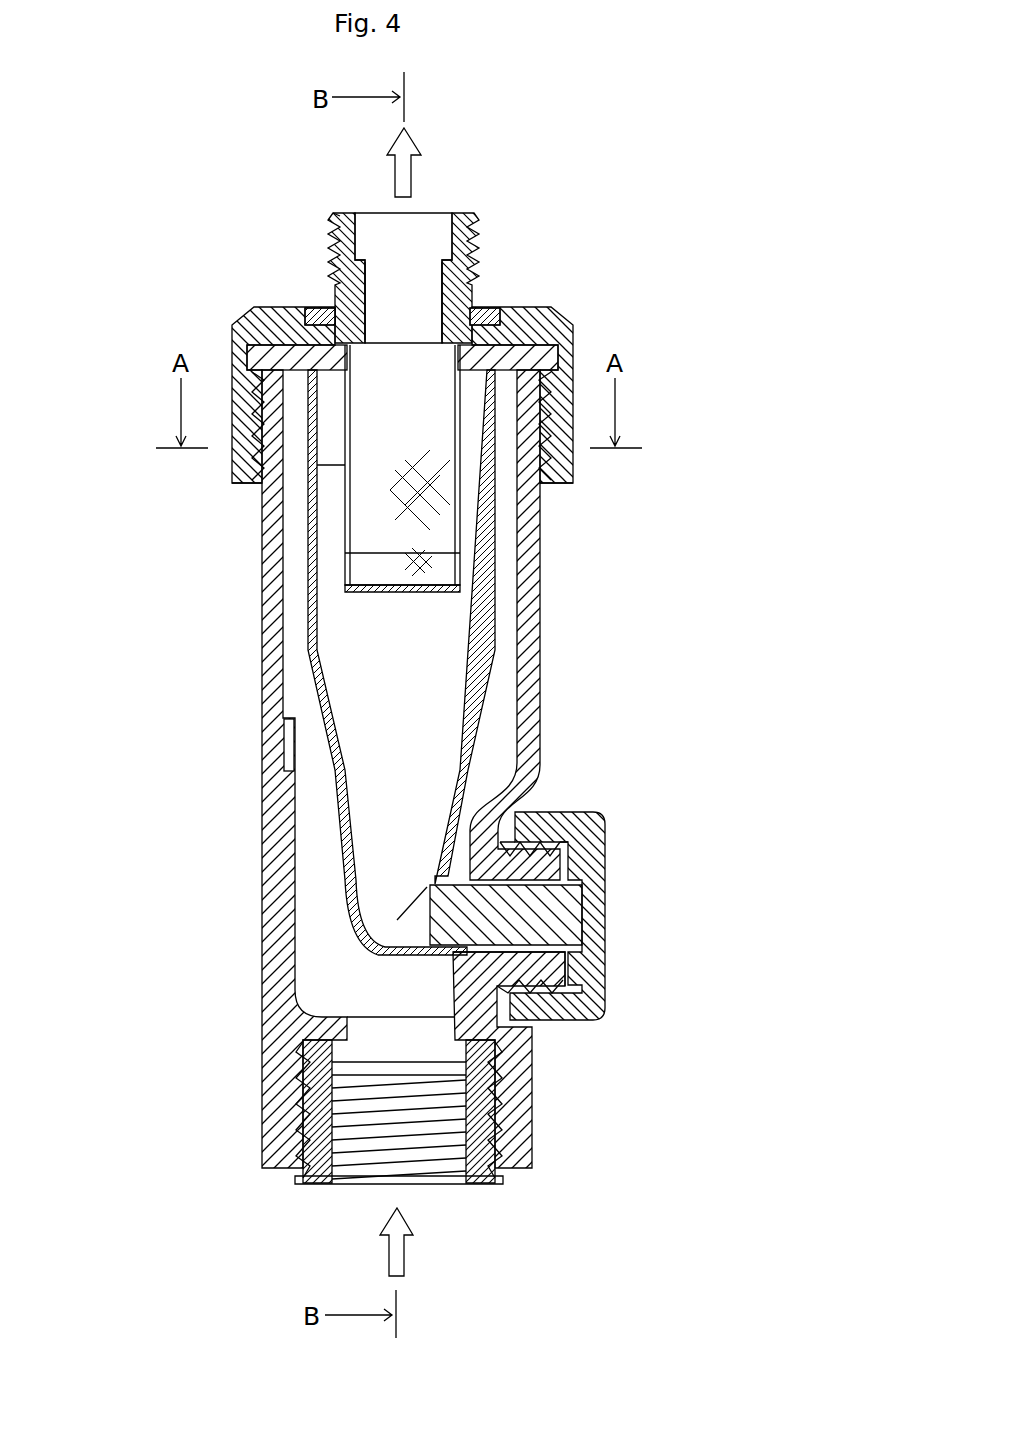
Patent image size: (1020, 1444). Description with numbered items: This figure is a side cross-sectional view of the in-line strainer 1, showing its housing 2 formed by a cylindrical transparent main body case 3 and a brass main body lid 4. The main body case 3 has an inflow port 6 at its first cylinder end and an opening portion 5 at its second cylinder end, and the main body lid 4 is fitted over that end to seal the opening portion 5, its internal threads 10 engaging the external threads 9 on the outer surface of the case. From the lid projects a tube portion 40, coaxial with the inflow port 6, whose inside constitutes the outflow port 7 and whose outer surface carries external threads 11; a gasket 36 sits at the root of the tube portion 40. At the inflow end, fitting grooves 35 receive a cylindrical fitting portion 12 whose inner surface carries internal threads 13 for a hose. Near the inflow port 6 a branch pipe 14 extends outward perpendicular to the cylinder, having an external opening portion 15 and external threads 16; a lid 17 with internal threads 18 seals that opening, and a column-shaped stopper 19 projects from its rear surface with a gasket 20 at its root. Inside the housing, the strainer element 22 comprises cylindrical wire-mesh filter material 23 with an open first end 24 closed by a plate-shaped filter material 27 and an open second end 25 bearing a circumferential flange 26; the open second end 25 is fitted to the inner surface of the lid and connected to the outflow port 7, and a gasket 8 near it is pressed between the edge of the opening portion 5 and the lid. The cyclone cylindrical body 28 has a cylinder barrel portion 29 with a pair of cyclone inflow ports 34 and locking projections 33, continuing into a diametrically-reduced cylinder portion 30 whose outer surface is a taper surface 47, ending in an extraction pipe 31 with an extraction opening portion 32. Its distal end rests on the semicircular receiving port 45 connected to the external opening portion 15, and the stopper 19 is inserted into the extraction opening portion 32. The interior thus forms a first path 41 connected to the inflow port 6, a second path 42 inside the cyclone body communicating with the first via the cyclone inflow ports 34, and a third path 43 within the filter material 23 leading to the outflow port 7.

The in-line strainer 1 is at (581, 168).
The housing 2 is at (366, 700).
The main body case 3 is at (241, 558).
The main body lid 4 is at (223, 322).
The opening portion 5 is at (297, 392).
The inflow port 6 is at (355, 1033).
The outflow port 7 is at (425, 288).
The gasket 8 is at (548, 350).
The external threads 9 is at (578, 392).
The internal threads 10 is at (548, 382).
The external threads 11 is at (335, 258).
The fitting portion 12 is at (319, 1202).
The internal threads 13 is at (463, 1150).
The branch pipe 14 is at (490, 885).
The external opening portion 15 is at (560, 943).
The external threads 16 is at (540, 1000).
The lid 17 is at (620, 850).
The internal threads 18 is at (580, 1020).
The stopper 19 is at (530, 840).
The gasket 20 is at (606, 866).
The strainer element 22 is at (463, 582).
The filter material 23 is at (460, 560).
The open first end 24 is at (333, 550).
The open second end 25 is at (365, 367).
The circumferential flange 26 is at (500, 345).
The filter material 27 is at (388, 597).
The cyclone cylindrical body 28 is at (308, 698).
The cylinder barrel portion 29 is at (497, 622).
The diametrically-reduced cylinder portion 30 is at (340, 790).
The extraction pipe 31 is at (440, 953).
The extraction opening portion 32 is at (358, 931).
The locking projections 33 is at (292, 465).
The cyclone inflow ports 34 is at (303, 505).
The fitting grooves 35 is at (310, 1110).
The gasket 36 is at (486, 320).
The tube portion 40 is at (350, 222).
The first path 41 is at (522, 598).
The second path 42 is at (478, 520).
The third path 43 is at (522, 490).
The receiving port 45 is at (533, 1077).
The taper surface 47 is at (375, 866).